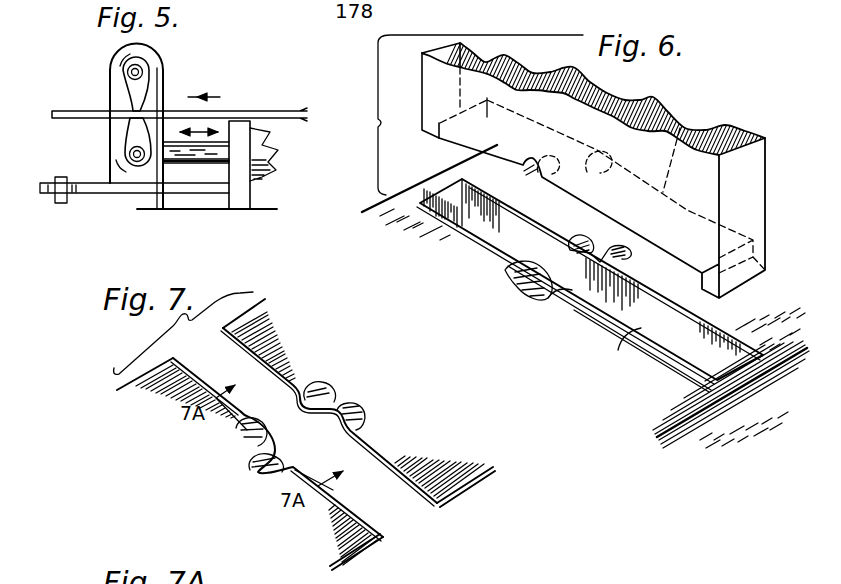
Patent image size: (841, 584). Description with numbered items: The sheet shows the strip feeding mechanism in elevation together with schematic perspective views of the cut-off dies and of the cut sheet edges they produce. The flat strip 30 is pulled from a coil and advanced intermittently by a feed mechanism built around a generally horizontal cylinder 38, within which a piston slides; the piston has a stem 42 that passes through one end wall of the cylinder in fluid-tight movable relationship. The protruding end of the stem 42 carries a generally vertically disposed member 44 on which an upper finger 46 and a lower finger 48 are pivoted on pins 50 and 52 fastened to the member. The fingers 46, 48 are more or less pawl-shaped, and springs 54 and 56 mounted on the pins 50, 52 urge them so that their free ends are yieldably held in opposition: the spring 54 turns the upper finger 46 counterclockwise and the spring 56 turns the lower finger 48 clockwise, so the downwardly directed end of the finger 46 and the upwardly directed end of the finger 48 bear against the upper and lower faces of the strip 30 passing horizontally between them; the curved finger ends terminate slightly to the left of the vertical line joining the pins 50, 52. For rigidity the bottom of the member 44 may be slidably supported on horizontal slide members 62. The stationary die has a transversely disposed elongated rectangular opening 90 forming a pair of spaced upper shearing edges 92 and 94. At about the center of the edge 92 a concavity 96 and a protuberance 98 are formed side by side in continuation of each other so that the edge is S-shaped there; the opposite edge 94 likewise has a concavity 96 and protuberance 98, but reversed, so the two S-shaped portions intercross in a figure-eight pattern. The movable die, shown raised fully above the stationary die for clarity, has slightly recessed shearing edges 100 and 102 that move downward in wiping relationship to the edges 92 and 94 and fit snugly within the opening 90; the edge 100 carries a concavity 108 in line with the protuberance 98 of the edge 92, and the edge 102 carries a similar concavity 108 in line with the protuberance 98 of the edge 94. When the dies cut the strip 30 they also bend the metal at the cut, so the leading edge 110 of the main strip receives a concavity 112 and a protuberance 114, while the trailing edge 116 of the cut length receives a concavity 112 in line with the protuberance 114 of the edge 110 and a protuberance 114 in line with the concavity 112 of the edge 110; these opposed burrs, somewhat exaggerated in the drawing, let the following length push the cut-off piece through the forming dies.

In FIG. 5, the flat strip 30 is at (287, 109).
In FIG. 5, the cylinder 38 is at (262, 122).
In FIG. 5, the stem 42 is at (197, 153).
In FIG. 5, the vertically disposed member 44 is at (170, 52).
In FIG. 5, the upper finger 46 is at (137, 92).
In FIG. 5, the lower finger 48 is at (130, 131).
In FIG. 5, the pin 50 is at (143, 73).
In FIG. 5, the pin 52 is at (140, 165).
In FIG. 5, the spring 54 is at (127, 80).
In FIG. 5, the spring 56 is at (130, 148).
In FIG. 5, the horizontal slide member 62 is at (93, 193).
In FIG. 6, the rectangular opening 90 is at (687, 357).
In FIG. 6, the upper shearing edge 92 is at (672, 300).
In FIG. 6, the upper shearing edge 94 is at (703, 360).
In FIG. 6, the concavity 96 is at (567, 243).
In FIG. 6, the protuberance 98 is at (512, 273).
In FIG. 6, the shearing edge 100 is at (703, 118).
In FIG. 6, the shearing edge 102 is at (640, 240).
In FIG. 6, the concavity 108 is at (623, 83).
In FIG. 7, the leading edge 110 is at (403, 482).
In FIG. 7, the concavity 112 is at (335, 380).
In FIG. 7, the protuberance 114 is at (363, 398).
In FIG. 7, the trailing edge 116 is at (367, 512).